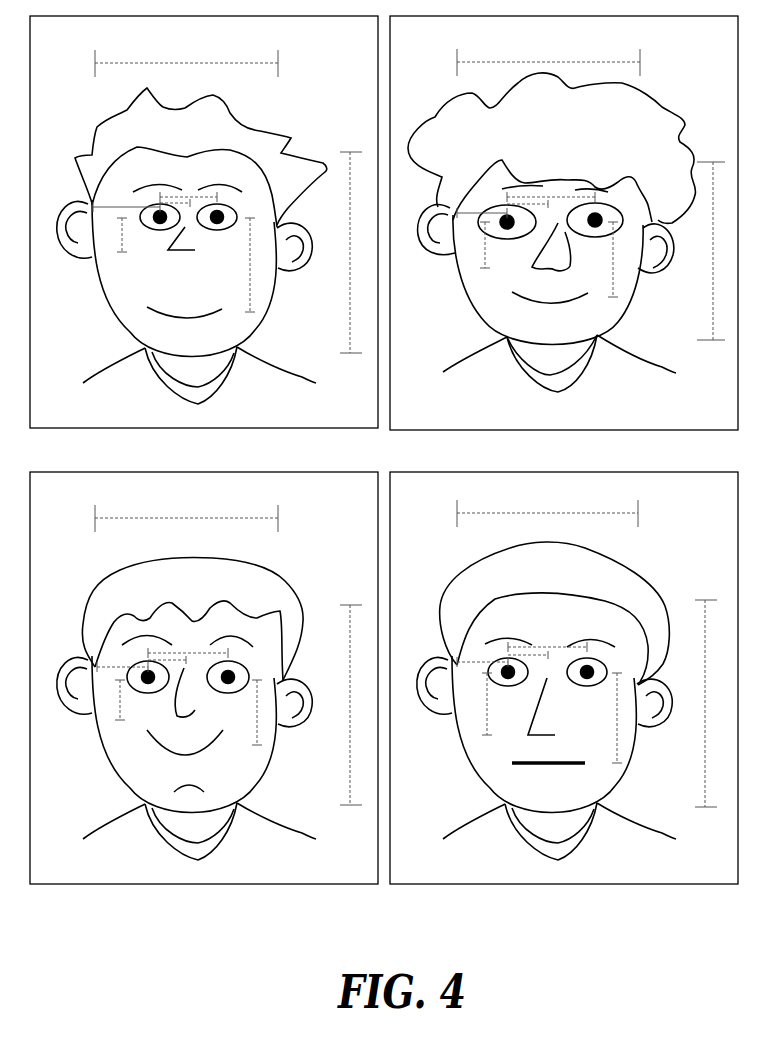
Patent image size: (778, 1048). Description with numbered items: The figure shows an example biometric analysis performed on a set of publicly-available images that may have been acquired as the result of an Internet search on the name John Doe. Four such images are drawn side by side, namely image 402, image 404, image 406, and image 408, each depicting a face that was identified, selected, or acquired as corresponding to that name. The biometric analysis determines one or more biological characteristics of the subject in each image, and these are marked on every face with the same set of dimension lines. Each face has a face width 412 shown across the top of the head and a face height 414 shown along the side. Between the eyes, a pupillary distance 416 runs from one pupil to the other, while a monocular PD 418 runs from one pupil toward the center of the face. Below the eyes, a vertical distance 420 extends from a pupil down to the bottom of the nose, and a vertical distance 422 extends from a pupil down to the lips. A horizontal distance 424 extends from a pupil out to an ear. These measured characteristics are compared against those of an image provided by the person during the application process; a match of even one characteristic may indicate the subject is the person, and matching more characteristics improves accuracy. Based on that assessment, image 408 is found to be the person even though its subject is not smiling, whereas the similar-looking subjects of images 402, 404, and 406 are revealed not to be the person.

The image 402 is at (204, 222).
The image 404 is at (564, 223).
The image 406 is at (204, 678).
The image 408 is at (564, 678).
The face width 412 is at (367, 290).
The face height 414 is at (524, 479).
The pupillary distance 416 is at (371, 421).
The monocular PD 418 is at (352, 433).
The vertical distance between a pupil and bottom of the nose 420 is at (295, 476).
The vertical distance between a pupil and the lips 422 is at (443, 490).
The horizontal distance between a pupil and an ear 424 is at (300, 433).